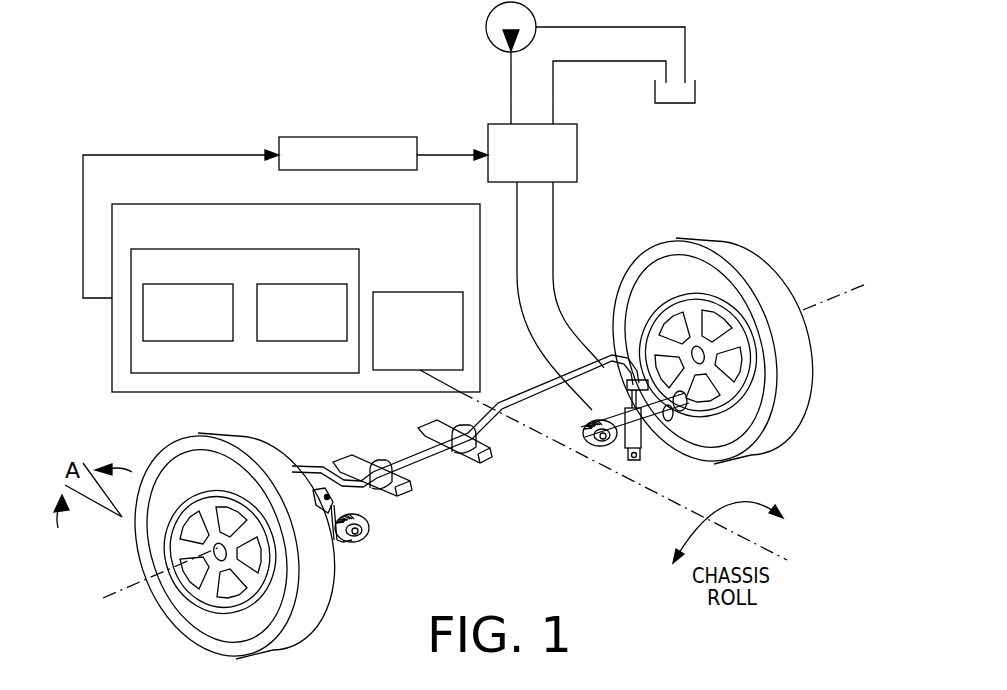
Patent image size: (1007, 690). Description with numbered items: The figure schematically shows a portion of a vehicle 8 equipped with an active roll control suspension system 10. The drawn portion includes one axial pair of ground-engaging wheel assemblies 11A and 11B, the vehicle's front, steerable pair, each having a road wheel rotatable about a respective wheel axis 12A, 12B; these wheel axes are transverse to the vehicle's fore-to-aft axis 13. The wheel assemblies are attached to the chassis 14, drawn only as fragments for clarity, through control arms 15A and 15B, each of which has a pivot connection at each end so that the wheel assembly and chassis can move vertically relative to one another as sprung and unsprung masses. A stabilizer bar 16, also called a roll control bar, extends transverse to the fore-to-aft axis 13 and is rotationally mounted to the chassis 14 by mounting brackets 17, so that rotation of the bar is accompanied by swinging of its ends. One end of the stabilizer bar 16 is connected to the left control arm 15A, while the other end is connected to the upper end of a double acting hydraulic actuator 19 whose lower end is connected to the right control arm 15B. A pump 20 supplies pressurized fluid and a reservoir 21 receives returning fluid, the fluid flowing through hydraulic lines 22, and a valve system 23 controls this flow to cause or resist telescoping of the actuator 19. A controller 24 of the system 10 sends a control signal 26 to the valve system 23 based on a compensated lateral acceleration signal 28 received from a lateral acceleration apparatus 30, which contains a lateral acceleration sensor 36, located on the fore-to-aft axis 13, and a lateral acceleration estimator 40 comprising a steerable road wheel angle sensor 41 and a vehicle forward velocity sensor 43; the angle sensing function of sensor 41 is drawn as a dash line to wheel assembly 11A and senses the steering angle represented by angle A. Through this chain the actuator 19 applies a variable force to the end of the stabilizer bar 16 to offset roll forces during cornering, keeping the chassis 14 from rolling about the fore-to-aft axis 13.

The vehicle 8 is at (122, 112).
The active roll control suspension system 10 is at (598, 245).
The wheel assembly 11A is at (145, 556).
The wheel assembly 11B is at (733, 256).
The wheel axis 12A is at (122, 594).
The wheel axis 12B is at (868, 286).
The fore-to-aft axis 13 is at (640, 483).
The chassis 14 is at (497, 452).
The control arm 15A is at (344, 548).
The control arm 15B is at (650, 428).
The stabilizer bar 16 is at (543, 380).
The mounting brackets 17 is at (468, 430).
The hydraulic actuator 19 is at (618, 443).
The pump 20 is at (488, 20).
The reservoir 21 is at (697, 88).
The hydraulic lines 22 is at (523, 292).
The valve system 23 is at (566, 124).
The controller 24 is at (343, 137).
The control signal 26 is at (428, 153).
The compensated lateral acceleration signal 28 is at (175, 155).
The lateral acceleration apparatus 30 is at (104, 382).
The lateral acceleration sensor 36 is at (390, 297).
The lateral acceleration estimator 40 is at (143, 254).
The steerable road wheel angle sensor 41 is at (278, 340).
The vehicle forward velocity sensor 43 is at (162, 340).